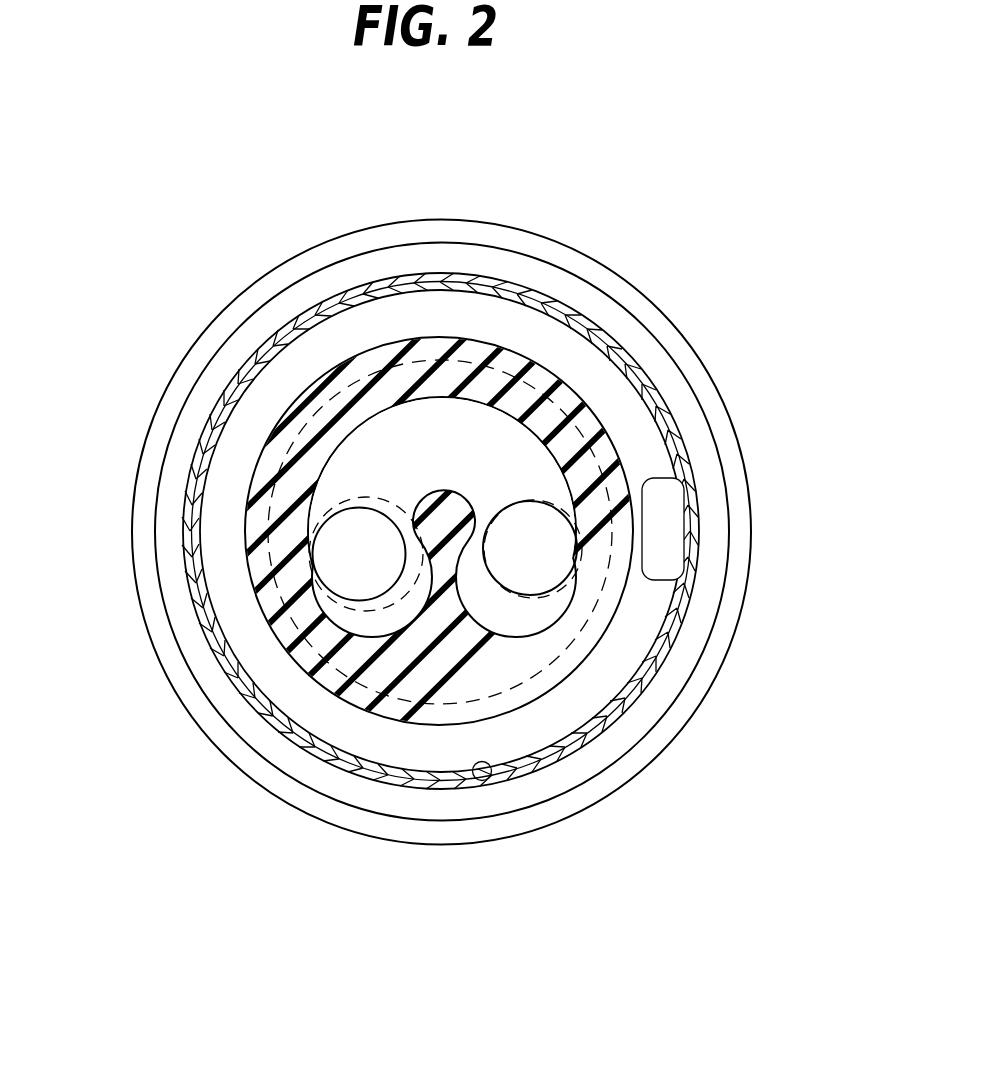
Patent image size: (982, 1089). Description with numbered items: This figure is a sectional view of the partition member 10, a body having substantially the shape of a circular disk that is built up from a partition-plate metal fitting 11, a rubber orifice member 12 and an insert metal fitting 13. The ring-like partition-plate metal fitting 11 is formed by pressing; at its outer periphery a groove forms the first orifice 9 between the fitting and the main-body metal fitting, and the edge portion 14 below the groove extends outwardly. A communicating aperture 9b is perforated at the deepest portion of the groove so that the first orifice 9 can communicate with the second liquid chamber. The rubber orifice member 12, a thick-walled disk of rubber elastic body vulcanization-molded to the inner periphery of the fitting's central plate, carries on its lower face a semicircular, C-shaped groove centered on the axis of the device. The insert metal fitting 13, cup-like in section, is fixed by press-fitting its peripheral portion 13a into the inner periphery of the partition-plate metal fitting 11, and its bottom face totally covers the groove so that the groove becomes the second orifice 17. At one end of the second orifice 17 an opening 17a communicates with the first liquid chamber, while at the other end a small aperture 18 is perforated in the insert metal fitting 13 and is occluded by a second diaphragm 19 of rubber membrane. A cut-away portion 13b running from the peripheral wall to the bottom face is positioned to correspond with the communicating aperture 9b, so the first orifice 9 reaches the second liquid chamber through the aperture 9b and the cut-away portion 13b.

The first orifice 9 is at (633, 340).
The communicating aperture 9b is at (697, 508).
The partition member 10 is at (608, 228).
The partition-plate metal fitting 11 is at (247, 357).
The rubber orifice member 12 is at (320, 678).
The insert metal fitting 13 is at (367, 740).
The peripheral portion 13a is at (506, 784).
The cut-away portion 13b is at (657, 572).
The edge portion 14 is at (667, 738).
The second orifice 17 is at (467, 427).
The opening 17a is at (572, 518).
The small aperture 18 is at (295, 588).
The second diaphragm 19 is at (342, 540).